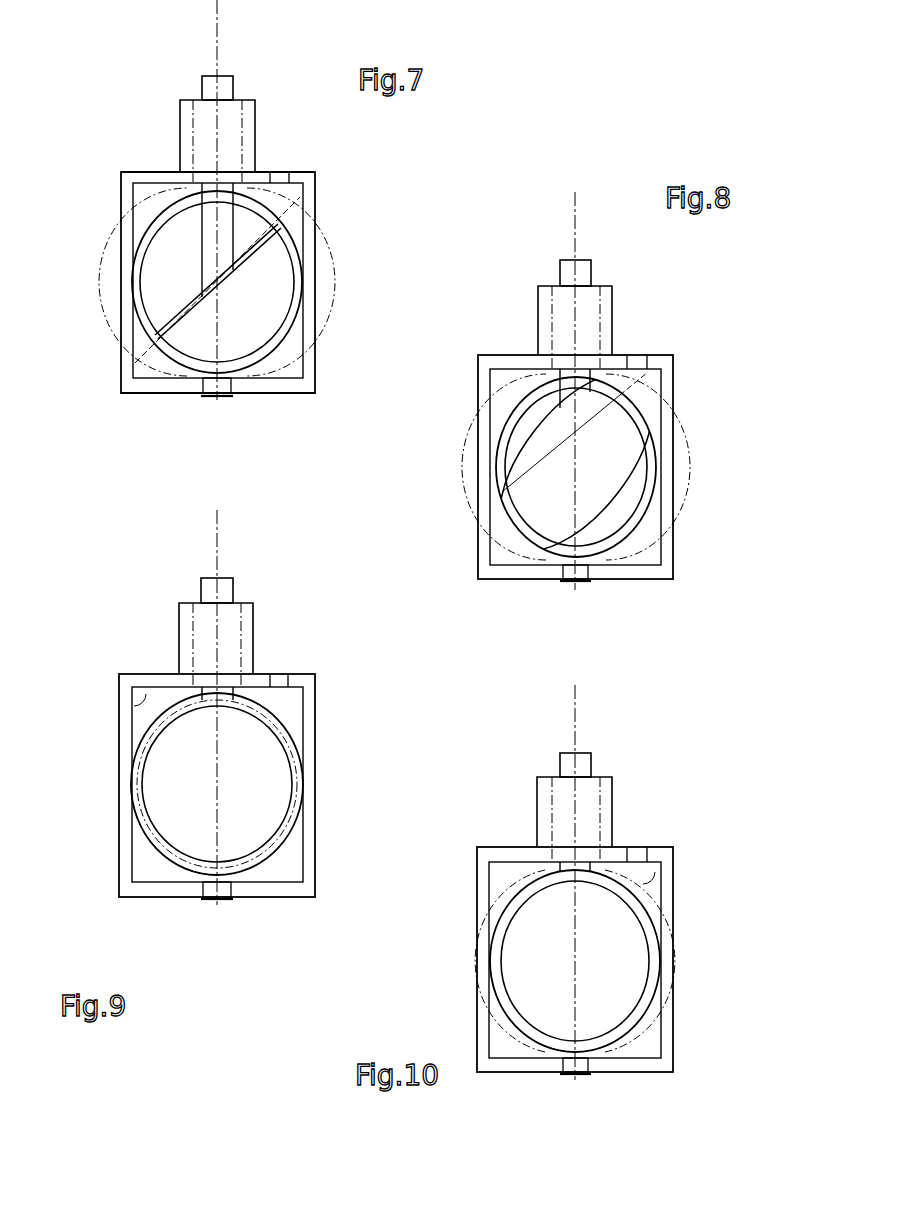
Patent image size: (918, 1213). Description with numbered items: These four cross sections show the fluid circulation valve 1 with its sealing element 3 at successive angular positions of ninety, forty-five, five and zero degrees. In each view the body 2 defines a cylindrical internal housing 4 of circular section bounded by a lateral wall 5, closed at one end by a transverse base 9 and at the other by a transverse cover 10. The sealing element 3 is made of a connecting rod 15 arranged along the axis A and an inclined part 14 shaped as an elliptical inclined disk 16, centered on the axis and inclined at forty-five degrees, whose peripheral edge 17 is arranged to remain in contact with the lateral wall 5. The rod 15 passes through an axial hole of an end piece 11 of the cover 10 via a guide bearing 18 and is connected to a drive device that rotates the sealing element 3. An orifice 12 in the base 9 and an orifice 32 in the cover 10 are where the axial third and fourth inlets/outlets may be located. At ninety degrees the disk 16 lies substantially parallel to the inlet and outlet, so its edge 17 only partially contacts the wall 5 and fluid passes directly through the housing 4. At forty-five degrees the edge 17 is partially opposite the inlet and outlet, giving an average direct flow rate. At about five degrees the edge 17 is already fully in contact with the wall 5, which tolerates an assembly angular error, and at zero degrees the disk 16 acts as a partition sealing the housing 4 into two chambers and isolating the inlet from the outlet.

In FIG. 7, the fluid circulation valve 1 is at (108, 160).
In FIG. 8, the fluid circulation valve 1 is at (698, 337).
In FIG. 9, the fluid circulation valve 1 is at (108, 632).
In FIG. 10, the fluid circulation valve 1 is at (705, 830).
In FIG. 7, the body 2 is at (119, 305).
In FIG. 8, the body 2 is at (674, 455).
In FIG. 9, the body 2 is at (119, 787).
In FIG. 10, the body 2 is at (674, 977).
In FIG. 7, the sealing element 3 is at (187, 270).
In FIG. 8, the sealing element 3 is at (533, 422).
In FIG. 9, the sealing element 3 is at (303, 780).
In FIG. 10, the sealing element 3 is at (505, 1023).
In FIG. 7, the internal housing 4 is at (260, 195).
In FIG. 8, the internal housing 4 is at (512, 380).
In FIG. 9, the internal housing 4 is at (285, 703).
In FIG. 10, the internal housing 4 is at (512, 875).
In FIG. 7, the lateral wall 5 is at (293, 223).
In FIG. 8, the lateral wall 5 is at (657, 543).
In FIG. 9, the lateral wall 5 is at (134, 706).
In FIG. 10, the lateral wall 5 is at (655, 872).
In FIG. 7, the transverse base 9 is at (250, 397).
In FIG. 7, the transverse cover 10 is at (158, 172).
In FIG. 7, the end piece 11 is at (255, 113).
In FIG. 7, the orifice 12 is at (217, 396).
In FIG. 8, the orifice 12 is at (575, 583).
In FIG. 9, the orifice 12 is at (217, 900).
In FIG. 10, the orifice 12 is at (575, 1076).
In FIG. 7, the inclined part 14 is at (231, 277).
In FIG. 7, the connecting rod 15 is at (233, 88).
In FIG. 8, the connecting rod 15 is at (560, 270).
In FIG. 9, the connecting rod 15 is at (233, 585).
In FIG. 10, the connecting rod 15 is at (591, 762).
In FIG. 7, the inclined disk 16 is at (247, 258).
In FIG. 8, the inclined disk 16 is at (505, 472).
In FIG. 9, the inclined disk 16 is at (142, 835).
In FIG. 10, the inclined disk 16 is at (533, 1040).
In FIG. 9, the peripheral edge 17 is at (300, 813).
In FIG. 10, the peripheral edge 17 is at (513, 897).
In FIG. 7, the guide bearing 18 is at (203, 113).
In FIG. 8, the guide bearing 18 is at (560, 312).
In FIG. 7, the orifice 32 is at (285, 167).
In FIG. 8, the orifice 32 is at (638, 352).
In FIG. 9, the orifice 32 is at (277, 667).
In FIG. 10, the orifice 32 is at (635, 843).